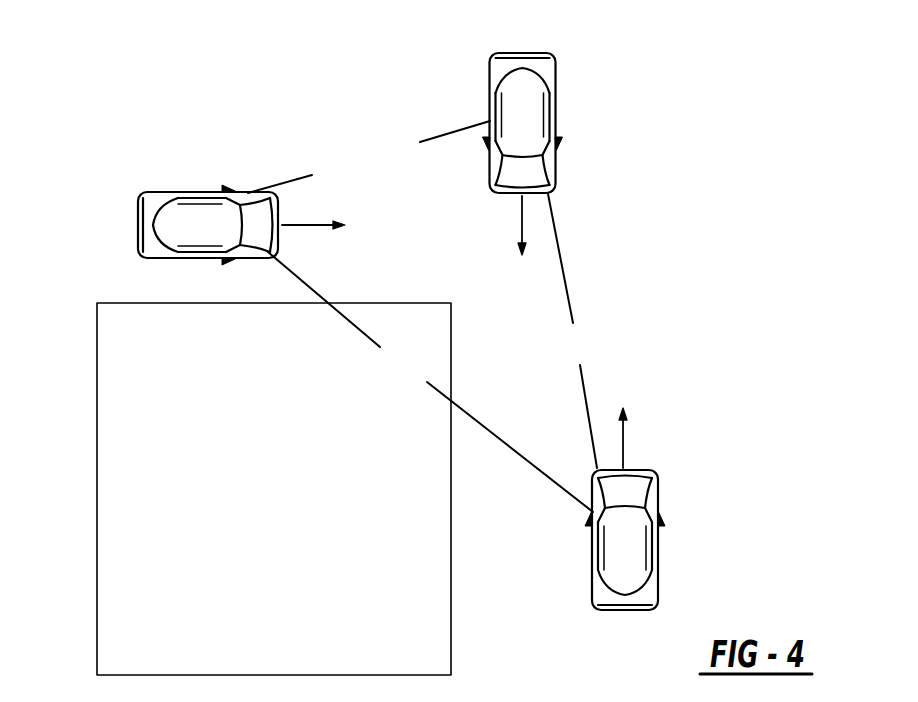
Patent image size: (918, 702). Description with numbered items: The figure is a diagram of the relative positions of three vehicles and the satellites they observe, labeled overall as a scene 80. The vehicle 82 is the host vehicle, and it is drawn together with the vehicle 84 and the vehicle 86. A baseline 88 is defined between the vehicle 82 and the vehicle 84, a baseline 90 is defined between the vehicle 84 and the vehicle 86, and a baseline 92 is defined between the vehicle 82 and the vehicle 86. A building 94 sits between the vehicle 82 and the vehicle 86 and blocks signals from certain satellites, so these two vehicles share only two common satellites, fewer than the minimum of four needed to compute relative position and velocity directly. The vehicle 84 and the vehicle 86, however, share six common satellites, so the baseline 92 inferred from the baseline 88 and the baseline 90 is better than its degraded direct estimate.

The vehicle communication network 80 is at (708, 53).
The host vehicle 82 is at (658, 497).
The vehicle 84 is at (557, 82).
The vehicle 86 is at (163, 193).
The baseline 88 is at (588, 403).
The baseline 90 is at (443, 133).
The baseline 92 is at (512, 448).
The building 94 is at (97, 607).